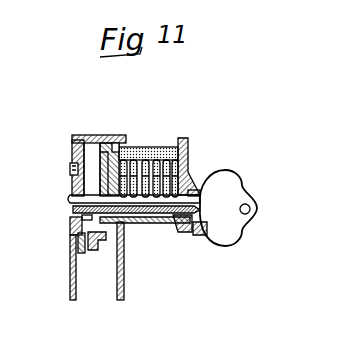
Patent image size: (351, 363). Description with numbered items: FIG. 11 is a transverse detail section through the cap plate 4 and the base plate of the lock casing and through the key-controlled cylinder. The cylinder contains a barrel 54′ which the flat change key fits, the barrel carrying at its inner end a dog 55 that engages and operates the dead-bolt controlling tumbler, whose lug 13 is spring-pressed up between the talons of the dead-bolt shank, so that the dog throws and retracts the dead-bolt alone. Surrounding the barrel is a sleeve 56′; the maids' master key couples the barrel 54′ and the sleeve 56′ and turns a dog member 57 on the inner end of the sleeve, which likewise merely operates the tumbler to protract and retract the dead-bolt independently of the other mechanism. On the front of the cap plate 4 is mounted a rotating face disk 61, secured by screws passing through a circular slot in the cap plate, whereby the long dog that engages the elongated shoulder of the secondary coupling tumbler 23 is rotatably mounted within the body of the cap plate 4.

The cap plate 4 is at (66, 268).
The lug 13 is at (104, 238).
The secondary coupling tumbler 23 is at (78, 236).
The barrel 54′ is at (197, 186).
The dog 55 is at (98, 160).
The sleeve 56′ is at (194, 190).
The dog member 57 is at (108, 145).
The rotating face disk 61 is at (74, 166).